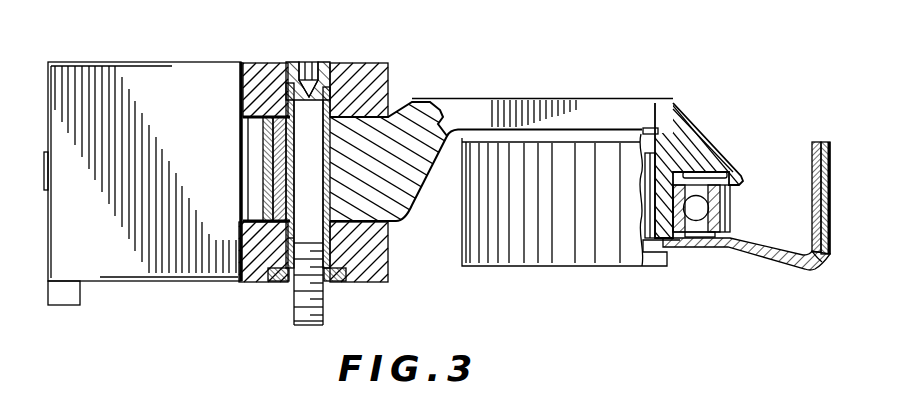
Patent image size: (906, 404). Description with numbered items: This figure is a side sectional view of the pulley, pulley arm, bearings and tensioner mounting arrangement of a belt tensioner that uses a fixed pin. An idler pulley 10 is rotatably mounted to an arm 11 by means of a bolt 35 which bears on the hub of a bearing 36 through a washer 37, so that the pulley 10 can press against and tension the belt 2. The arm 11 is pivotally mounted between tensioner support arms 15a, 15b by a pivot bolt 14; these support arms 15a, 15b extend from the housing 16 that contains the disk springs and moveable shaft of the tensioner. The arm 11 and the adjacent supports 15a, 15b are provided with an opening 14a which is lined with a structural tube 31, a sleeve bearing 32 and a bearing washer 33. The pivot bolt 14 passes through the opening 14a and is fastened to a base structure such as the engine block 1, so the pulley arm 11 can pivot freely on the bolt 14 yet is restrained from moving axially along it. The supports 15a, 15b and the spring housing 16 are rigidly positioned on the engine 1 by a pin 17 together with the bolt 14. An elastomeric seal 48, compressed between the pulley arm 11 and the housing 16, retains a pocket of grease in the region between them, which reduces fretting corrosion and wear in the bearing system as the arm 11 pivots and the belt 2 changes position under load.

The engine block 1 is at (500, 315).
The belt 2 is at (823, 262).
The idler pulley 10 is at (812, 205).
The arm 11 is at (481, 98).
The pivot bolt 14 is at (299, 47).
The opening 14a is at (339, 179).
The tensioner support arm 15a is at (388, 70).
The tensioner support arm 15b is at (390, 258).
The housing 16 is at (184, 62).
The pin 17 is at (82, 296).
The structural tube 31 is at (290, 239).
The sleeve bearing 32 is at (332, 206).
The bearing washer 33 is at (334, 283).
The bolt 35 is at (652, 268).
The bearing 36 is at (727, 204).
The washer 37 is at (720, 249).
The elastomeric seal 48 is at (264, 192).